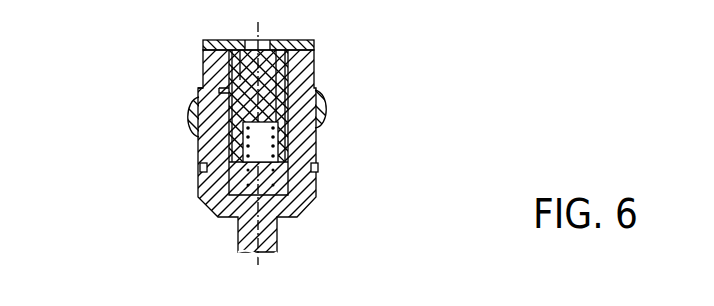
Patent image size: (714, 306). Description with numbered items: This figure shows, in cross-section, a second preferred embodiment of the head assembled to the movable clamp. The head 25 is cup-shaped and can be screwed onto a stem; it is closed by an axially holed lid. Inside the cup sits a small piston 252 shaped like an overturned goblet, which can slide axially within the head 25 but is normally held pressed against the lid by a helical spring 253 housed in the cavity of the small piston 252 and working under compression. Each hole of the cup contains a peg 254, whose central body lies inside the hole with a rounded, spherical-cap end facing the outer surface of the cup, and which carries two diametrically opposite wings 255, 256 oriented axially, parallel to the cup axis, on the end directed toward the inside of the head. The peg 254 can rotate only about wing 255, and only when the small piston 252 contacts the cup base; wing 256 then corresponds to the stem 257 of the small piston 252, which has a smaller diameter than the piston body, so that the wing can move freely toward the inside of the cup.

The head 25 is at (318, 86).
The small piston 252 is at (326, 113).
The helical spring 253 is at (272, 180).
The peg 254 is at (314, 41).
The wing 255 is at (198, 150).
The wing 256 is at (200, 90).
The stem 257 is at (286, 72).